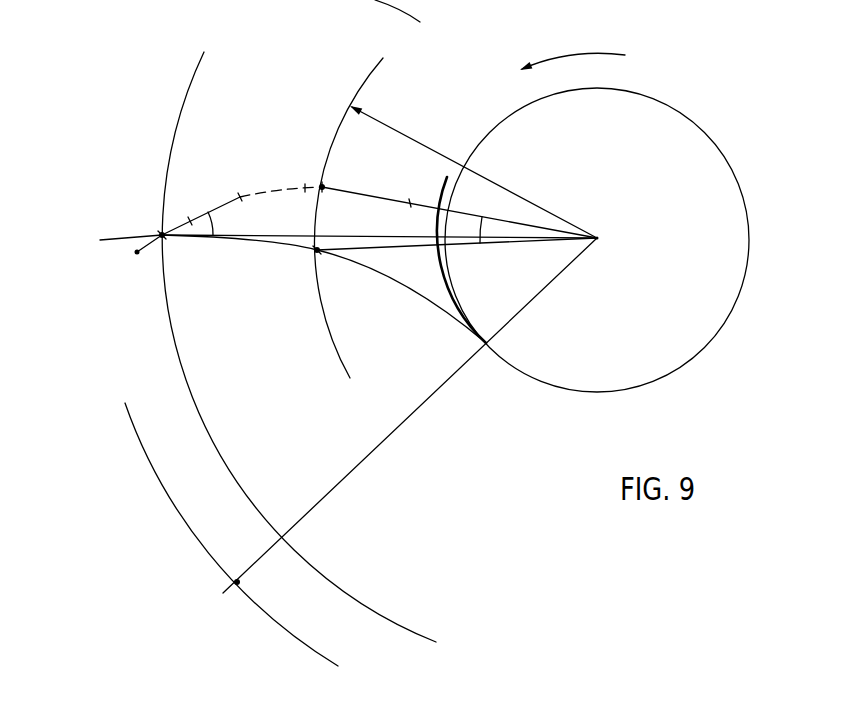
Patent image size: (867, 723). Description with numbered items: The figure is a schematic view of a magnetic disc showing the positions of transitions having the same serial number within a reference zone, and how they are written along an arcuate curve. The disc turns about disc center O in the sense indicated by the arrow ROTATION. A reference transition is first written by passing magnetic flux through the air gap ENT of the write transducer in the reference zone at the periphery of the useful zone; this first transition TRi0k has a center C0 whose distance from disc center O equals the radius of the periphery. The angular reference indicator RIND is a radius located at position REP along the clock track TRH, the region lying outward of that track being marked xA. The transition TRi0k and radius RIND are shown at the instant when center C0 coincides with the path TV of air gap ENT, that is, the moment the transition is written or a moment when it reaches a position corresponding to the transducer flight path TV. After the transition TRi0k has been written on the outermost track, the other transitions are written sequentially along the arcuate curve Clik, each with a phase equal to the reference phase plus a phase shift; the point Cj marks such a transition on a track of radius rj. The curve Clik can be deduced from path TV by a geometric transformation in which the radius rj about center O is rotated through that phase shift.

The rotation of disk direction arrow ROTATION is at (574, 35).
The disc center O is at (593, 240).
The radius rj is at (455, 218).
The clock track TRH is at (272, 622).
The region xA is at (234, 676).
The angular reference indicator RIND is at (364, 453).
The position of the angular reference indicator REP is at (236, 582).
The path of air gap TV is at (397, 282).
The arcuate curve Clik is at (323, 186).
The point Cj is at (307, 226).
The center of first transition C0 is at (174, 250).
The air gap ENT is at (160, 233).
The first transition TRi0k is at (136, 254).